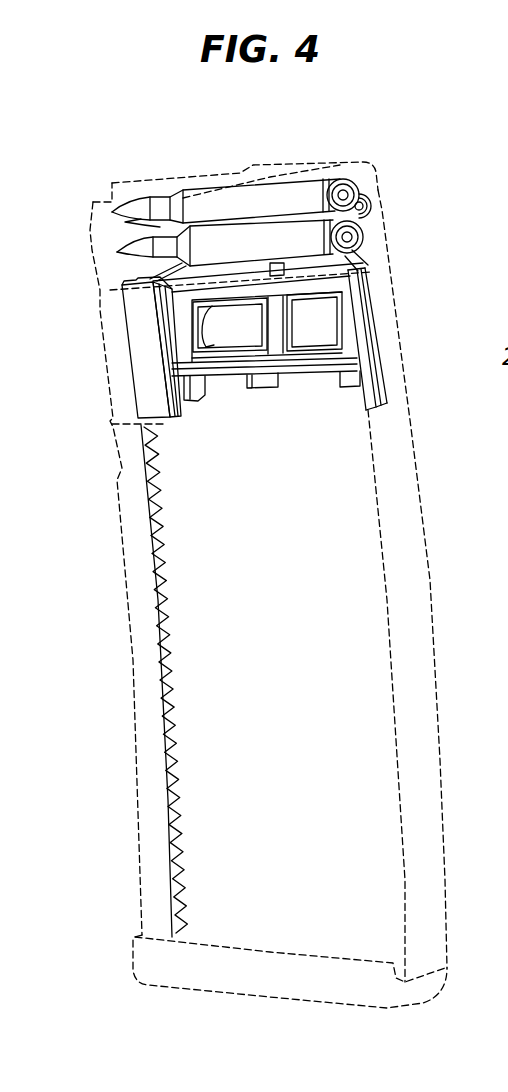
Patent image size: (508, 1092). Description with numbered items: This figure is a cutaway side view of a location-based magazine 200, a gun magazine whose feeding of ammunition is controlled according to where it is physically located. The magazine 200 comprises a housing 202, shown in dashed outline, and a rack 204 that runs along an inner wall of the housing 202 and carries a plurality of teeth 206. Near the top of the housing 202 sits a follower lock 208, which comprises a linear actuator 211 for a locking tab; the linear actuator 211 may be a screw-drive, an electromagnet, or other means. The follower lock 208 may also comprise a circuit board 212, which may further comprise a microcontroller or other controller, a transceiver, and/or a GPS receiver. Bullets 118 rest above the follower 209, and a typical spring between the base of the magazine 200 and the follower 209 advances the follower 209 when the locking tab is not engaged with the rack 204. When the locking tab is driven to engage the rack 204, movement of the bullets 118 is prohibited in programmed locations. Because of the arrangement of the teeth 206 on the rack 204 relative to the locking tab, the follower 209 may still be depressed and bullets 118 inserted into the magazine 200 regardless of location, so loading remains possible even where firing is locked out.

The location-based magazine 200 is at (105, 142).
The housing 202 is at (432, 568).
The rack 204 is at (160, 616).
The teeth 206 is at (160, 507).
The follower lock 208 is at (97, 343).
The follower 209 is at (322, 288).
The linear actuator 211 is at (220, 337).
The circuit board 212 is at (300, 362).
The bullets 118 is at (274, 190).